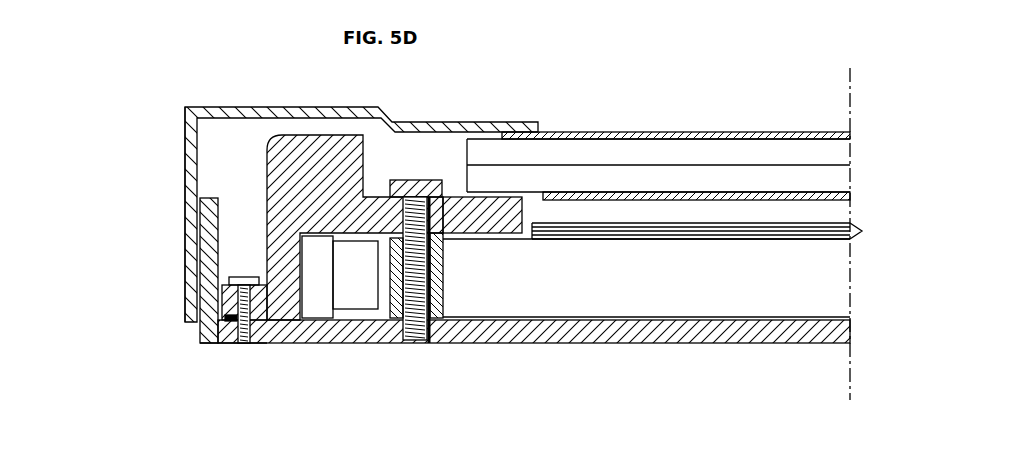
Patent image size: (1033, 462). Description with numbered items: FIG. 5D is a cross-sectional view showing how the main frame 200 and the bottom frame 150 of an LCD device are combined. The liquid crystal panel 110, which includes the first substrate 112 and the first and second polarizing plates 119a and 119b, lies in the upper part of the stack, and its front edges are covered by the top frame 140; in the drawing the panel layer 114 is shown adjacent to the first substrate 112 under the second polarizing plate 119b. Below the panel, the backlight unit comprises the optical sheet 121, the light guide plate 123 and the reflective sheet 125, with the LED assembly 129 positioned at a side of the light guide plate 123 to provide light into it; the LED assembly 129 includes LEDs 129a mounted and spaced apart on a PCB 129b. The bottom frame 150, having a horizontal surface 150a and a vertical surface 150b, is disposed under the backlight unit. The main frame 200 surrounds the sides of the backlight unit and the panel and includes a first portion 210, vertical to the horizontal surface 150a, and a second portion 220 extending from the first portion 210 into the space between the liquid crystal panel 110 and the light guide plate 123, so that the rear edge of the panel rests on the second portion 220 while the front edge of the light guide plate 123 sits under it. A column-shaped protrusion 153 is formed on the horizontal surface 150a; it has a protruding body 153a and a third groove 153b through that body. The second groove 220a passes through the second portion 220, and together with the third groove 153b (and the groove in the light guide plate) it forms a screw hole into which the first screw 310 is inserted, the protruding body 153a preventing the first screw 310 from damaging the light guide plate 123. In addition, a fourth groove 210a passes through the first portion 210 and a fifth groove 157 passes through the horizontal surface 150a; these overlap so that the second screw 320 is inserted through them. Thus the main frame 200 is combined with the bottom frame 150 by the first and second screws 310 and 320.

The liquid crystal panel 110 is at (658, 124).
The first substrate 112 is at (683, 172).
The display panel upper layer 114 is at (648, 138).
The first polarizing plate 119a is at (787, 193).
The second polarizing plate 119b is at (747, 137).
The optical sheet 121 is at (846, 209).
The light guide plate 123 is at (850, 279).
The reflective sheet 125 is at (850, 320).
The LED assembly 129 is at (337, 344).
The LED 129a is at (350, 299).
The PCB 129b is at (320, 312).
The top frame 140 is at (228, 112).
The bottom frame 150 is at (152, 263).
The horizontal surface 150a is at (230, 343).
The vertical surface 150b is at (186, 300).
The column-shaped protrusion 153 is at (620, 294).
The protruding body 153a is at (431, 342).
The third groove 153b is at (448, 318).
The fifth groove 157 is at (234, 343).
The main frame 200 is at (233, 239).
The first portion 210 is at (267, 243).
The fourth groove 210a is at (226, 338).
The second portion 220 is at (285, 186).
The second groove 220a is at (431, 236).
The first screw 310 is at (417, 342).
The second screw 320 is at (255, 343).